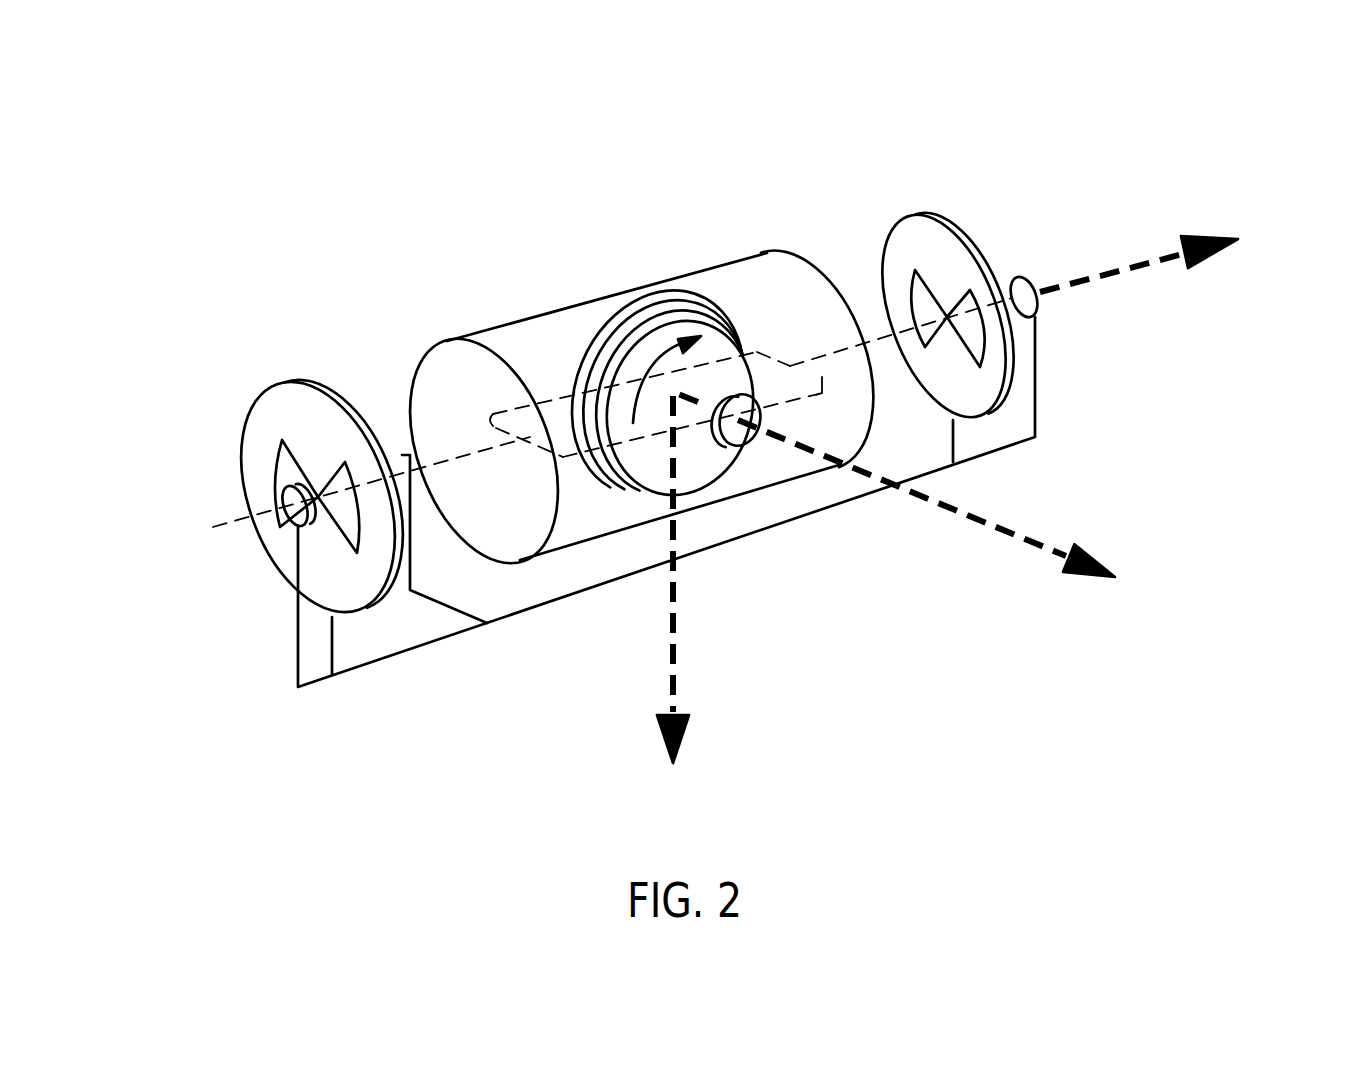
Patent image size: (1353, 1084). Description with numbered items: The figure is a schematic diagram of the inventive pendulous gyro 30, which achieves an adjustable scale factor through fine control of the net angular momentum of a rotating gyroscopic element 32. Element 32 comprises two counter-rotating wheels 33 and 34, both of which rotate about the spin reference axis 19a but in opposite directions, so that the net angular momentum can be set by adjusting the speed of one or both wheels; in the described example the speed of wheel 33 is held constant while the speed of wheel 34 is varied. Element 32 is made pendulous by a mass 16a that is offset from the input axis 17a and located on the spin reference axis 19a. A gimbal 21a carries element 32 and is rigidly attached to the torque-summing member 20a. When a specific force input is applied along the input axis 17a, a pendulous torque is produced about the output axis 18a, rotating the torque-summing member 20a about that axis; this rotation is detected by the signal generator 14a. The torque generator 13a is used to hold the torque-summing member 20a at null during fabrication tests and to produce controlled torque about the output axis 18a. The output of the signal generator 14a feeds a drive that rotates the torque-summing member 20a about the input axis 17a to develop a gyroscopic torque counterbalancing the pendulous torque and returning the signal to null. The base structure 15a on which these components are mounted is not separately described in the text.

The gyro 30 is at (337, 305).
The torque generator 13a is at (958, 224).
The signal generator 14a is at (247, 427).
The base plate 15a is at (430, 647).
The mass 16a is at (746, 442).
The input axis 17a is at (673, 660).
The output axis 18a is at (1122, 272).
The spin reference axis 19a is at (1033, 540).
The torque-summing member 20a is at (699, 331).
The gimbal 21a is at (676, 520).
The rotating gyroscopic element 32 is at (573, 317).
The wheel 33 is at (747, 338).
The wheel 34 is at (567, 378).